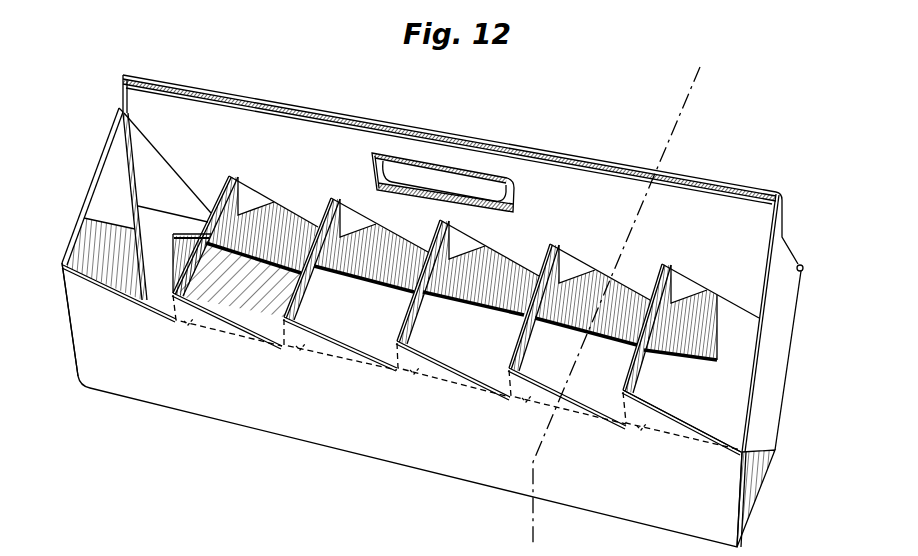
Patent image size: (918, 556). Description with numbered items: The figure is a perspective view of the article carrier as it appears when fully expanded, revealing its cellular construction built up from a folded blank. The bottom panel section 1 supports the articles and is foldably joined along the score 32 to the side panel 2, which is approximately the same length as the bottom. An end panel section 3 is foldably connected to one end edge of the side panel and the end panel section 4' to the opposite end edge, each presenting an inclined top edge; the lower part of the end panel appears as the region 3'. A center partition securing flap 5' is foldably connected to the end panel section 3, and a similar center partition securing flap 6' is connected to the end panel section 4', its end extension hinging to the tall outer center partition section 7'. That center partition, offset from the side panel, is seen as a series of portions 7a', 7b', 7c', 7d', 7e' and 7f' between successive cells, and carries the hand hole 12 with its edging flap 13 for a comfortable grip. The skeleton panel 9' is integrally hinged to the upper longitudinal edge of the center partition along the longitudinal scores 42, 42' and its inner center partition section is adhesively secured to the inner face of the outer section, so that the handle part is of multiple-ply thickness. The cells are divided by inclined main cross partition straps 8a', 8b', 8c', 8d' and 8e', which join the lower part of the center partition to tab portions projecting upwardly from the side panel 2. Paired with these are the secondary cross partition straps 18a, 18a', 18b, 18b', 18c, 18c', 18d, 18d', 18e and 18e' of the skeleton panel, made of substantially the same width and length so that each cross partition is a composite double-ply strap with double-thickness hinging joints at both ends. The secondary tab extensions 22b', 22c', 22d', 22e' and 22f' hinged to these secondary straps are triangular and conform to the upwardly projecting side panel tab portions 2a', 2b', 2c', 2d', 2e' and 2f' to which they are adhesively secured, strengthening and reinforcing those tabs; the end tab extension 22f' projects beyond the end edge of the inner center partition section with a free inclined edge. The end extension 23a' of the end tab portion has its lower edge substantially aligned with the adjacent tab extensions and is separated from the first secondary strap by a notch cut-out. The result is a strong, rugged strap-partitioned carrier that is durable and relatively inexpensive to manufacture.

The bottom panel section 1 is at (242, 262).
The side panel 2 is at (362, 432).
The saw-toothed tab 2a' is at (61, 319).
The tab portion 2b' is at (227, 324).
The tab portion 2c' is at (340, 349).
The tab portion 2d' is at (453, 376).
The tab portion 2e' is at (567, 404).
The tab portion 2f' is at (682, 425).
The end panel section 3 is at (798, 360).
The end panel section 3' is at (774, 498).
The end panel section 4' is at (137, 165).
The center partition securing flap 5' is at (770, 353).
The center partition securing flap 6' is at (104, 259).
The outer center partition section 7' is at (460, 169).
The outer center partition section portion 7a' is at (210, 164).
The outer center partition section portion 7b' is at (282, 189).
The outer center partition section portion 7c' is at (379, 225).
The outer center partition section portion 7d' is at (489, 248).
The outer center partition section portion 7e' is at (593, 294).
The outer center partition section portion 7f' is at (710, 291).
The cross partition strap 8a' is at (184, 243).
The cross partition strap 8b' is at (262, 225).
The cross partition strap 8c' is at (371, 256).
The cross partition strap 8d' is at (481, 278).
The cross partition strap 8e' is at (659, 319).
The skeleton panel 9' is at (141, 206).
The hand hole 12 is at (482, 180).
The edging flap 13 is at (425, 172).
The secondary cross partition strap 18a is at (225, 230).
The secondary cross partition strap 18a' is at (221, 220).
The secondary cross partition strap 18b is at (334, 257).
The secondary cross partition strap 18b' is at (327, 247).
The secondary cross partition strap 18c is at (444, 271).
The secondary cross partition strap 18c' is at (435, 282).
The secondary cross partition strap 18d is at (552, 300).
The secondary cross partition strap 18d' is at (542, 308).
The secondary cross partition strap 18e is at (673, 323).
The secondary cross partition strap 18e' is at (659, 329).
The secondary tab extension 22b' is at (227, 321).
The secondary tab extension 22c' is at (340, 344).
The secondary tab extension 22d' is at (453, 367).
The secondary tab extension 22e' is at (567, 391).
The end tab extension 22f' is at (682, 419).
The end extension 23a' is at (112, 218).
The score 32 is at (339, 288).
The longitudinal score 42 is at (449, 131).
The longitudinal score 42' is at (449, 141).